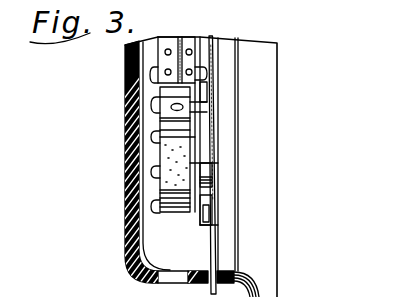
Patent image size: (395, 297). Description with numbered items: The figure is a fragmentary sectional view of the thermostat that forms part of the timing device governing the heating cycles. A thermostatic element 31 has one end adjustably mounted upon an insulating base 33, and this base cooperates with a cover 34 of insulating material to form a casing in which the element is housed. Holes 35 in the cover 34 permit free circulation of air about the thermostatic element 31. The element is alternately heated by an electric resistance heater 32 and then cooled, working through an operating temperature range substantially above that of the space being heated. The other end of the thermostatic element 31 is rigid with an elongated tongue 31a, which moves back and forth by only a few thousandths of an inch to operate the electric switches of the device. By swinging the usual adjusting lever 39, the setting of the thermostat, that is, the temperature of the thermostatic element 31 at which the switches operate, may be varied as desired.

The elongated tongue 31a is at (163, 60).
The thermostatic element 31 is at (168, 153).
The holes 35 is at (160, 171).
The cover 34 is at (126, 229).
The electric resistance heater 32 is at (199, 227).
The insulating base 33 is at (262, 172).
The adjusting lever 39 is at (216, 249).